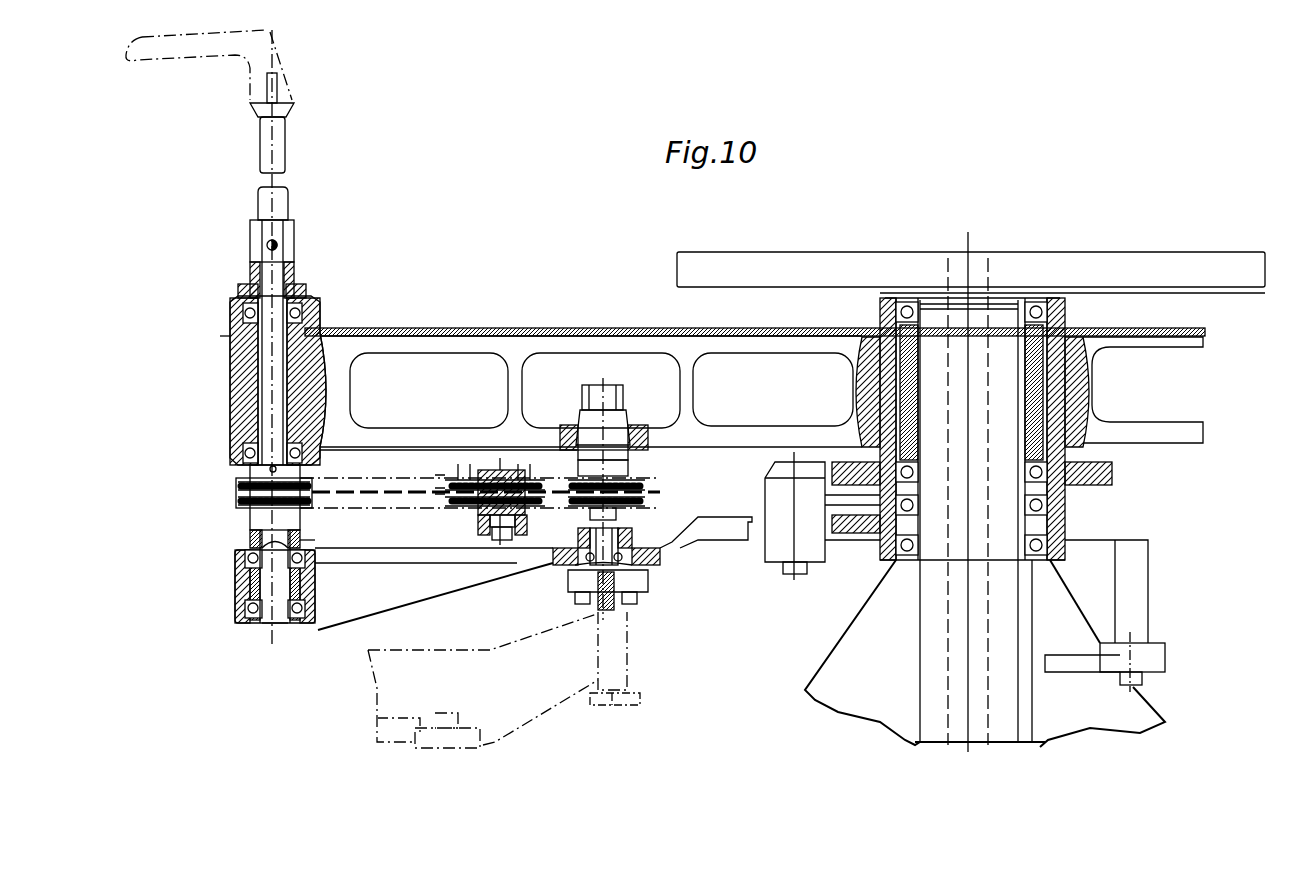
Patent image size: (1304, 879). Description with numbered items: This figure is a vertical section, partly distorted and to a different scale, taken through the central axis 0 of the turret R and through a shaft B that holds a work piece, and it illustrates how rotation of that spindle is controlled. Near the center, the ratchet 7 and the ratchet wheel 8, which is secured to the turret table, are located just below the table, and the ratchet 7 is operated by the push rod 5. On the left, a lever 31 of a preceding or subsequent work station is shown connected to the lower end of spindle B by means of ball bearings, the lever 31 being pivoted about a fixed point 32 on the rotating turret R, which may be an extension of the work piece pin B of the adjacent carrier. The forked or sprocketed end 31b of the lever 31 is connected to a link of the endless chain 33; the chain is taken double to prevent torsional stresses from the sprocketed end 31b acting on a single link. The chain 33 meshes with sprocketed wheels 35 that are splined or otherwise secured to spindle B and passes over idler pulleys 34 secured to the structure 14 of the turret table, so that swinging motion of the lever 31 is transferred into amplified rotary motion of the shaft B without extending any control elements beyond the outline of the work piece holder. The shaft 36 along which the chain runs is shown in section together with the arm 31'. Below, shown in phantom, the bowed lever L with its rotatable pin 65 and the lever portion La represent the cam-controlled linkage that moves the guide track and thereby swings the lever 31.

The work piece shaft B is at (283, 272).
The turret R is at (412, 340).
The machine support 14 is at (522, 345).
The endless chain 33 is at (432, 505).
The idler pulleys 34 is at (640, 501).
The sprocketed wheels 35 is at (243, 501).
The shaft 36 is at (468, 505).
The fixed pivot point 32 is at (272, 520).
The lever 31 is at (438, 506).
The support arm 31' is at (425, 618).
The sprocketed end 31b is at (518, 538).
The ratchet 7 is at (770, 470).
The ratchet wheel 8 is at (1112, 477).
The push rod 5 is at (1078, 668).
The rotatable pin 65 is at (610, 658).
The bowed lever L is at (548, 700).
The lamp axis La is at (378, 718).
The axis of the turret 0 is at (968, 475).